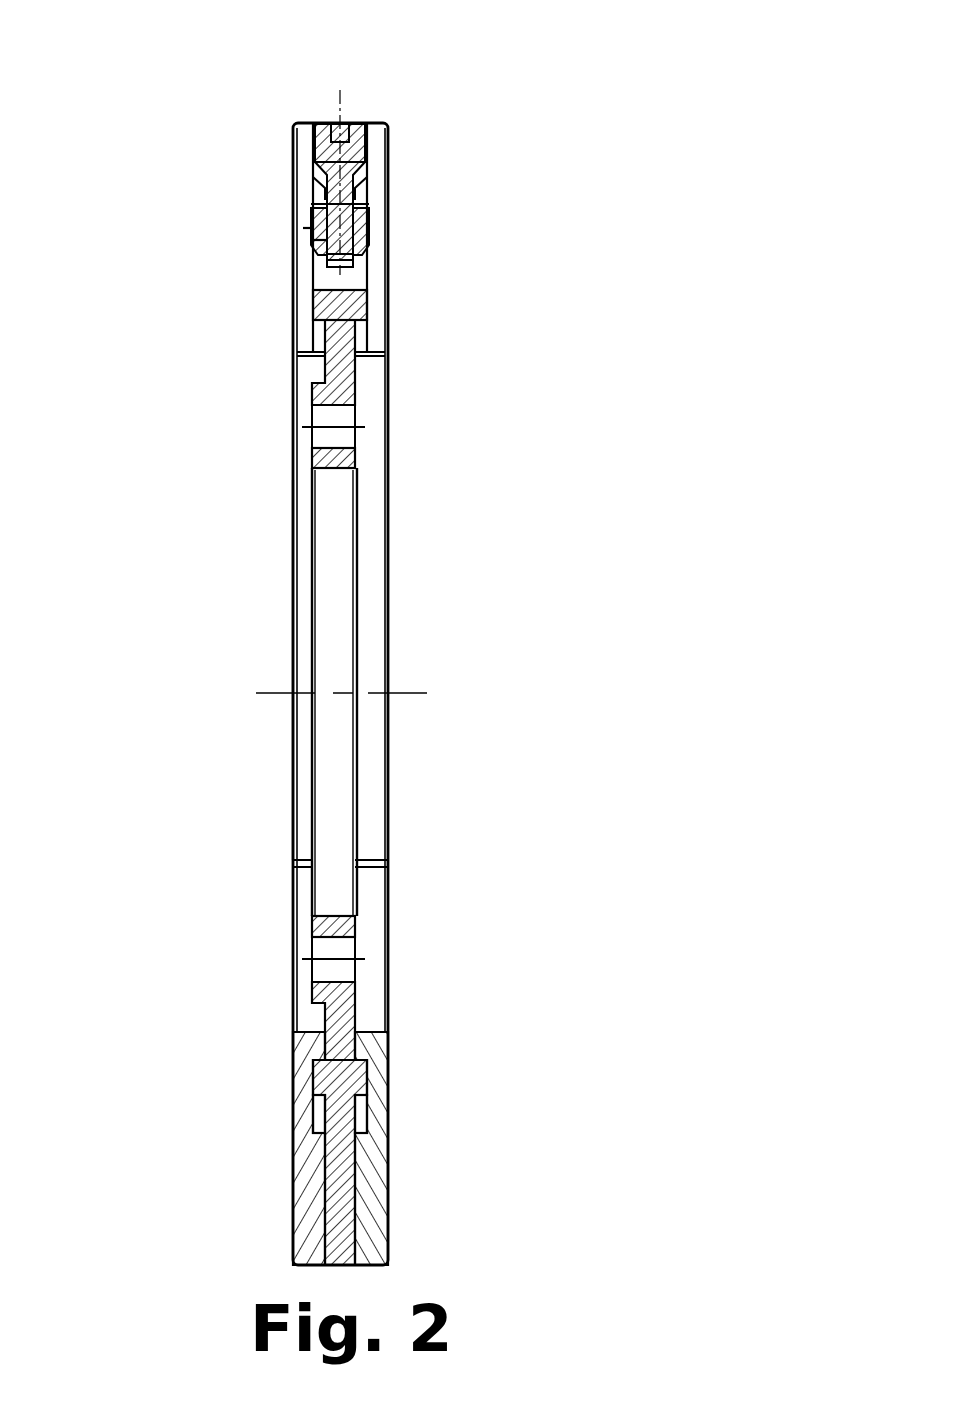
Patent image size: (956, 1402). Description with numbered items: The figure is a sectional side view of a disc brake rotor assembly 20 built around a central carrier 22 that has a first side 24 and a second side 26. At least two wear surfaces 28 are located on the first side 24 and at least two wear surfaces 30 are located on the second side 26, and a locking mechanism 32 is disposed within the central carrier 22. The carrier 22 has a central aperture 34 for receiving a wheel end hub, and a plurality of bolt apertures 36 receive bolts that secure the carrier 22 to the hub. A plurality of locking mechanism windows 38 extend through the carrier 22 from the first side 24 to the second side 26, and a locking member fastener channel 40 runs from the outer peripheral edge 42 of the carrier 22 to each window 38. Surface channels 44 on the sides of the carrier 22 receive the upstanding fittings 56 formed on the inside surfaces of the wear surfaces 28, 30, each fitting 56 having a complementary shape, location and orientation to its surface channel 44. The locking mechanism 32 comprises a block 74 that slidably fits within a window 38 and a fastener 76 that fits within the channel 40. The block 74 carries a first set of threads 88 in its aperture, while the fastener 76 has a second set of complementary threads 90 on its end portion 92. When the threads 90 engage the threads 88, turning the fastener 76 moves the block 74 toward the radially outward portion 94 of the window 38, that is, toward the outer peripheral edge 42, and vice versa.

The disc brake rotor assembly 20 is at (558, 143).
The central carrier 22 is at (358, 350).
The first side 24 is at (218, 368).
The second side 26 is at (481, 486).
The wear surface 28 is at (300, 230).
The wear surface 30 is at (378, 297).
The locking mechanism 32 is at (355, 78).
The central aperture 34 is at (262, 653).
The bolt aperture 36 is at (292, 437).
The locking mechanism window 38 is at (370, 236).
The locking member fastener channel 40 is at (358, 198).
The outer peripheral edge 42 is at (321, 140).
The surface channel 44 is at (323, 1193).
The upstanding fitting 56 is at (380, 1192).
The block 74 is at (370, 220).
The fastener 76 is at (318, 152).
The first set of threads 88 is at (368, 250).
The second set of complementary threads 90 is at (315, 240).
The end portion 92 is at (298, 263).
The radially outward portion 94 is at (288, 200).